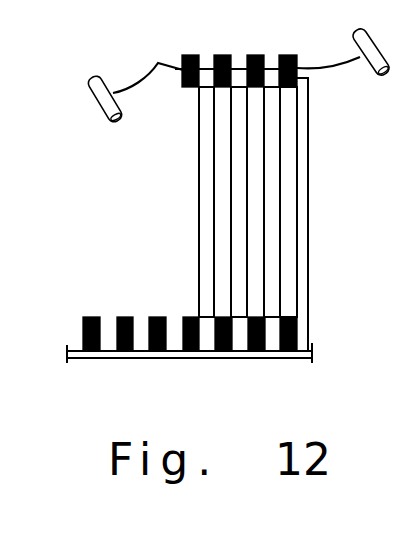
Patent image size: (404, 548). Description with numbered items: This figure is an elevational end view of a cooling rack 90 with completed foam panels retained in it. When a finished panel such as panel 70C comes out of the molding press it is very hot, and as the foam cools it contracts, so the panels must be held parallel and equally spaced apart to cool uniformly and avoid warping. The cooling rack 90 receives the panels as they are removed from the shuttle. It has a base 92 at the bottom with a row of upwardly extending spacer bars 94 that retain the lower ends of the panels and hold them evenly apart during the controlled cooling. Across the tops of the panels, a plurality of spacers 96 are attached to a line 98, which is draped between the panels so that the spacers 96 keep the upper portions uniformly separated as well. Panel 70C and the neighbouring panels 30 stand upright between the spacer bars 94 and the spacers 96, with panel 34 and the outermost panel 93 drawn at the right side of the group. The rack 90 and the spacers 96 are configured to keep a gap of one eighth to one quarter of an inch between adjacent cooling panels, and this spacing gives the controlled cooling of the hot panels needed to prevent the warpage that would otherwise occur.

The electrode strip 30 is at (207, 263).
The electrode strip 34 is at (282, 160).
The finished foam panel 70C is at (197, 193).
The cooling rack 90 is at (275, 358).
The base 92 is at (145, 351).
The outer strip 93 is at (308, 180).
The spacer bars 94 is at (222, 351).
The spacers 96 is at (222, 55).
The line 98 is at (158, 63).